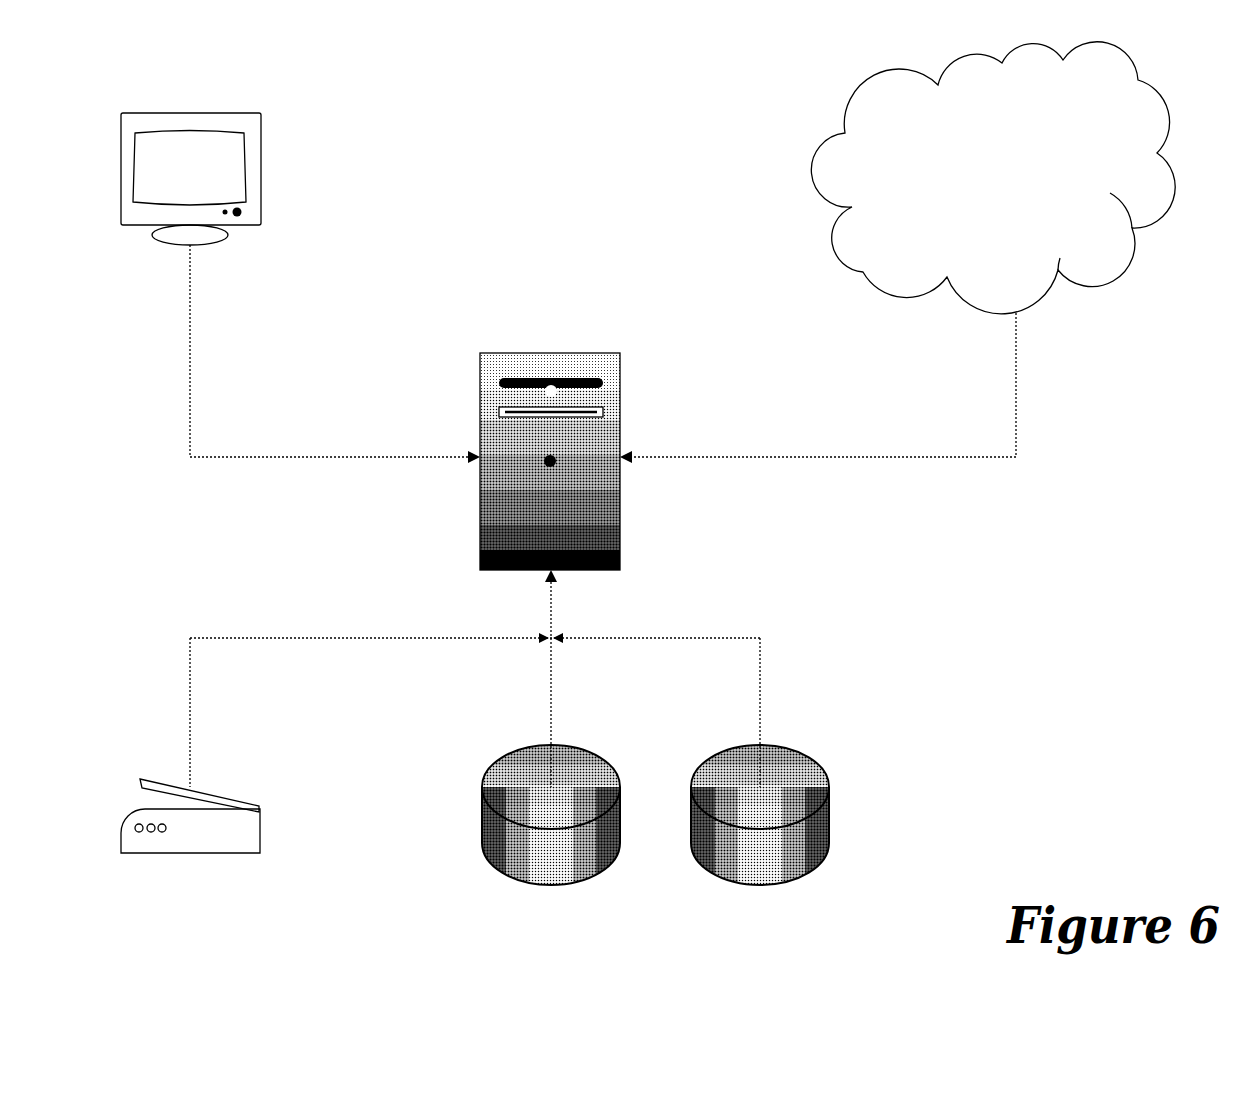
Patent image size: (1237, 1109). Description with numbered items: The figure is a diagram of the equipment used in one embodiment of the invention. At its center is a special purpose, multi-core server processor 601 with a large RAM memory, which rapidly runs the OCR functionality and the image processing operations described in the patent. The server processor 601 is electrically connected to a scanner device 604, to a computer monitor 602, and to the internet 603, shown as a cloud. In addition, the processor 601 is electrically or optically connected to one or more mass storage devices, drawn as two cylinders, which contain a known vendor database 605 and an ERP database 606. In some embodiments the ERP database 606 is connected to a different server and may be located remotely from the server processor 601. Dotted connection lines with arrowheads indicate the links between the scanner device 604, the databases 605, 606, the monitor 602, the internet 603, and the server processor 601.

The multi-core server processor 601 is at (532, 510).
The computer monitor 602 is at (171, 190).
The internet 603 is at (976, 190).
The scanner device 604 is at (190, 841).
The known vendor database 605 is at (532, 865).
The ERP database 606 is at (741, 865).